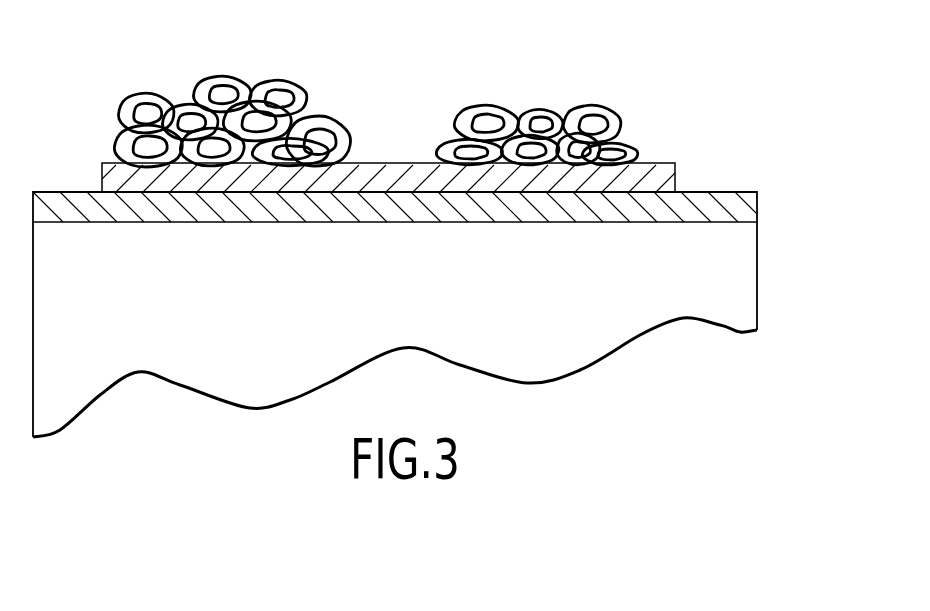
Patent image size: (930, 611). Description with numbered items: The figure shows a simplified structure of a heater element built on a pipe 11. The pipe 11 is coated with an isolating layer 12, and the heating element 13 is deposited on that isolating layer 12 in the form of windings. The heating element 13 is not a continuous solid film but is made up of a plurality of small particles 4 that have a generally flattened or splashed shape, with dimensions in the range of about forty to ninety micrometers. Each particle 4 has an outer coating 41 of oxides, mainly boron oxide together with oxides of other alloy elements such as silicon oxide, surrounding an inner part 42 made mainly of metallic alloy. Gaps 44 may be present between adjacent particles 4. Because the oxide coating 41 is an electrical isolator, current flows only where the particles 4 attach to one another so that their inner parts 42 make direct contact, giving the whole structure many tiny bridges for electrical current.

The pipe 11 is at (743, 280).
The isolating layer 12 is at (670, 180).
The heating element 13 is at (303, 90).
The particles 4 is at (167, 100).
The outer coating 41 is at (143, 97).
The inner part 42 is at (140, 98).
The gaps 44 is at (183, 140).